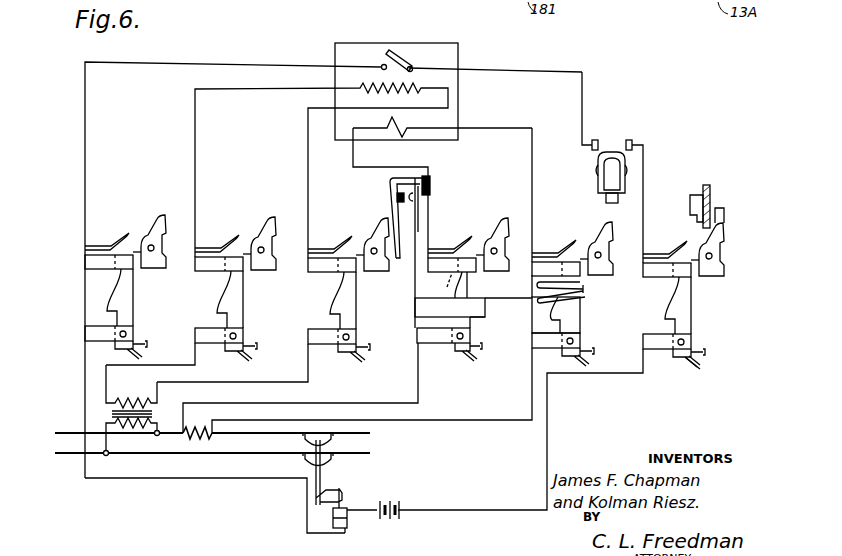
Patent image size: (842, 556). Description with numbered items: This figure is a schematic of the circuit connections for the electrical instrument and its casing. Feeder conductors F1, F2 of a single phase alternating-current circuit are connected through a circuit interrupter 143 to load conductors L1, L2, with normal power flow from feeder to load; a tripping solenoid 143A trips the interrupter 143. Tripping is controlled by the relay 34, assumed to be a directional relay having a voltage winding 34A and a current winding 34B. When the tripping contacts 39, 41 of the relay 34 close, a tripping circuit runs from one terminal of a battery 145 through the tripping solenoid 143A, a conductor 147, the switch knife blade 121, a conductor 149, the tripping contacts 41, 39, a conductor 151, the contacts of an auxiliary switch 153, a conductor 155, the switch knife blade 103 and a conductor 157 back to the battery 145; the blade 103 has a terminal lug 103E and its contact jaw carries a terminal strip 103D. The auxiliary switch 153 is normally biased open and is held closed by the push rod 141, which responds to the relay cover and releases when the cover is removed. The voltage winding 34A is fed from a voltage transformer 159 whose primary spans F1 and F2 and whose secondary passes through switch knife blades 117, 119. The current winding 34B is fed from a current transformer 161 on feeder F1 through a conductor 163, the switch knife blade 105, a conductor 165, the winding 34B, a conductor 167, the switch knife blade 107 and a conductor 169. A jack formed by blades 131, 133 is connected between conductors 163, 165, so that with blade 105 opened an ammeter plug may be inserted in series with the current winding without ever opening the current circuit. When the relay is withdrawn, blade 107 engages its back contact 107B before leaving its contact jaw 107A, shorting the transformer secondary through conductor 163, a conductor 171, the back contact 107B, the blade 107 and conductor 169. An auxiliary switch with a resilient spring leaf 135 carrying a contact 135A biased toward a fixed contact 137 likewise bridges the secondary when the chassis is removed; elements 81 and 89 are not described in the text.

The relay 34 is at (453, 56).
The tripping contact 39 is at (386, 57).
The tripping contact 41 is at (382, 70).
The voltage winding 34A is at (425, 88).
The current winding 34B is at (401, 136).
The conductor 149 is at (85, 155).
The conductor 151 is at (583, 88).
The auxiliary switch 153 is at (630, 146).
The push rod 141 is at (605, 199).
The conductor 155 is at (645, 178).
The conductor 165 is at (533, 176).
The conductor 167 is at (353, 160).
The fixed contact 81 is at (431, 174).
The resilient spring leaf 135 is at (390, 191).
The contact 135A is at (396, 200).
The fixed contact 137 is at (419, 216).
The switch knife blade 121 is at (135, 296).
The switch knife blade 119 is at (243, 302).
The switch knife blade 117 is at (350, 305).
The switch knife blade 107 is at (467, 288).
The contact jaw 107A is at (436, 284).
The back contact 107B is at (482, 320).
The conductor 171 is at (522, 299).
The conductor 169 is at (382, 403).
The switch knife blade 105 is at (581, 314).
The jack blade 133 is at (586, 284).
The jack blade 131 is at (586, 294).
The conductor 163 is at (470, 420).
The switch knife blade 103 is at (697, 316).
The cam 89 is at (712, 191).
The terminal strip 103D is at (691, 243).
The terminal lug 103E is at (706, 350).
The conductor 157 is at (549, 436).
The voltage transformer 159 is at (114, 412).
The feeder conductor F1 is at (65, 433).
The feeder conductor F2 is at (66, 455).
The current transformer 161 is at (200, 429).
The load conductor L1 is at (372, 432).
The load conductor L2 is at (372, 452).
The circuit interrupter 143 is at (326, 480).
The tripping solenoid 143A is at (347, 516).
The battery 145 is at (391, 498).
The conductor 147 is at (227, 482).